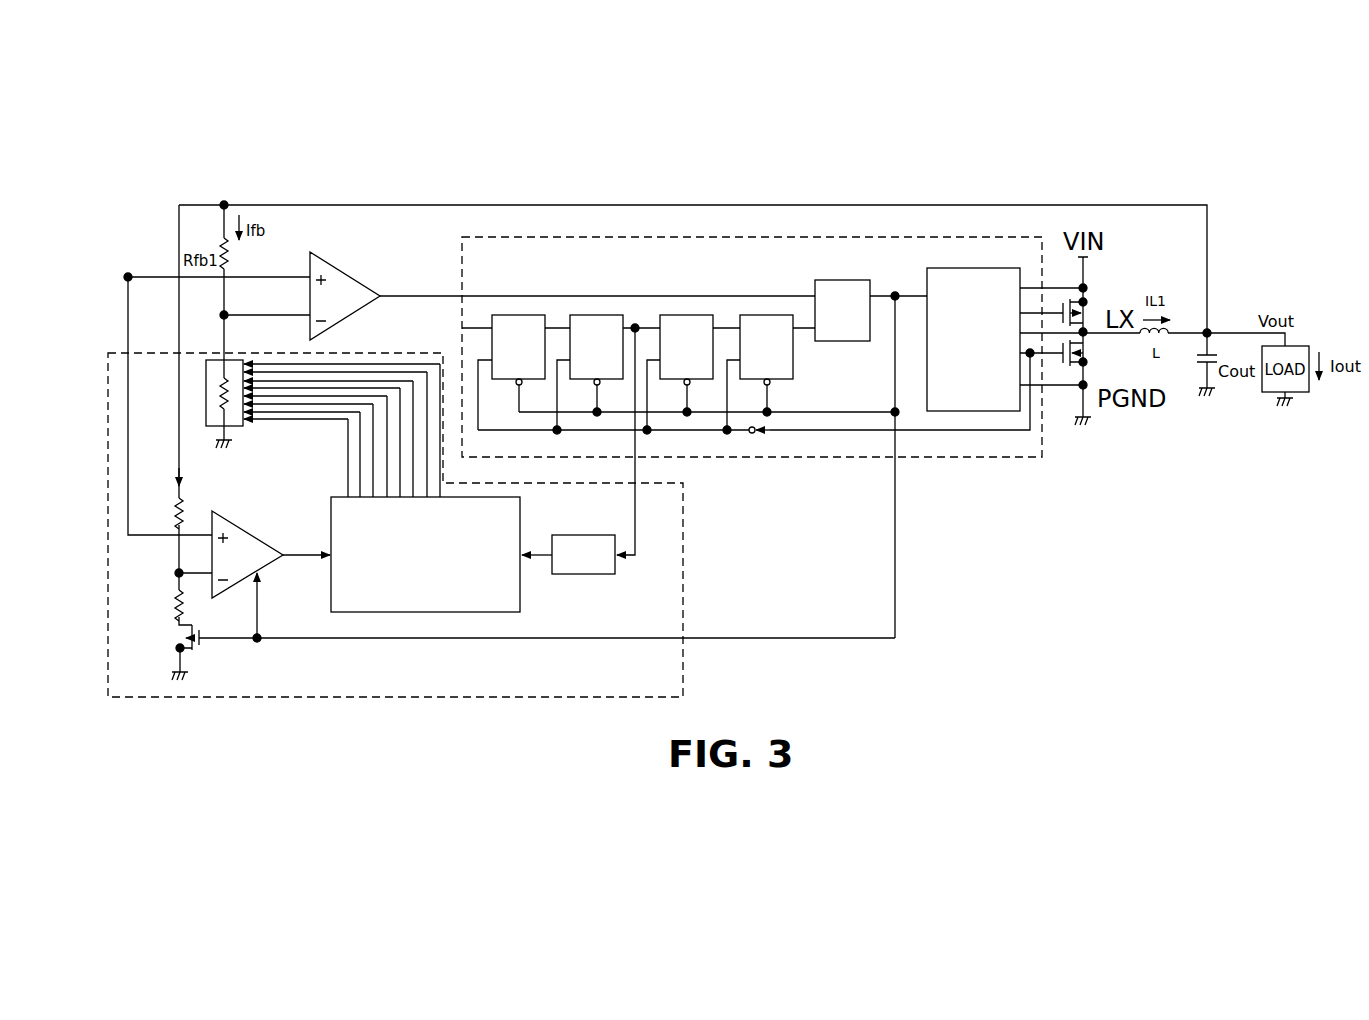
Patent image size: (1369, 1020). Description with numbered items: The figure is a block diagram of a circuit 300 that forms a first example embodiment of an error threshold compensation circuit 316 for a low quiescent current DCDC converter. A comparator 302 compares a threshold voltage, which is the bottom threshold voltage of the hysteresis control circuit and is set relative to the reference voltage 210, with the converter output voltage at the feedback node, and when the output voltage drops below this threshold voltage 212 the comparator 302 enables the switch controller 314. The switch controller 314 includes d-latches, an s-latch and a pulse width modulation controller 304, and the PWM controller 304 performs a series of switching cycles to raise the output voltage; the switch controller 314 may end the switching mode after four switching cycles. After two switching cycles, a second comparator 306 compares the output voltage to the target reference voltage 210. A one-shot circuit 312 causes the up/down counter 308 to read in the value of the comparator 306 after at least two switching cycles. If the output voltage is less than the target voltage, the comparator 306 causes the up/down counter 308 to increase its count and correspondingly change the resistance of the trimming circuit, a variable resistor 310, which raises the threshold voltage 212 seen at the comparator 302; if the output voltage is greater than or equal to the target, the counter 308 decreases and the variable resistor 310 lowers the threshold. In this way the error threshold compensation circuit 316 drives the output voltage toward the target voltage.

The circuit 300 is at (168, 119).
The Vref 210 is at (195, 396).
The threshold voltage 212 is at (265, 315).
The comparator 302 is at (562, 294).
The PWM controller 304 is at (973, 339).
The comparator 306 is at (271, 554).
The up/down counter 308 is at (425, 554).
The variable resistor 310 is at (197, 382).
The one-shot circuit 312 is at (578, 451).
The switch controller 314 is at (801, 437).
The error threshold compensation circuit 316 is at (501, 512).